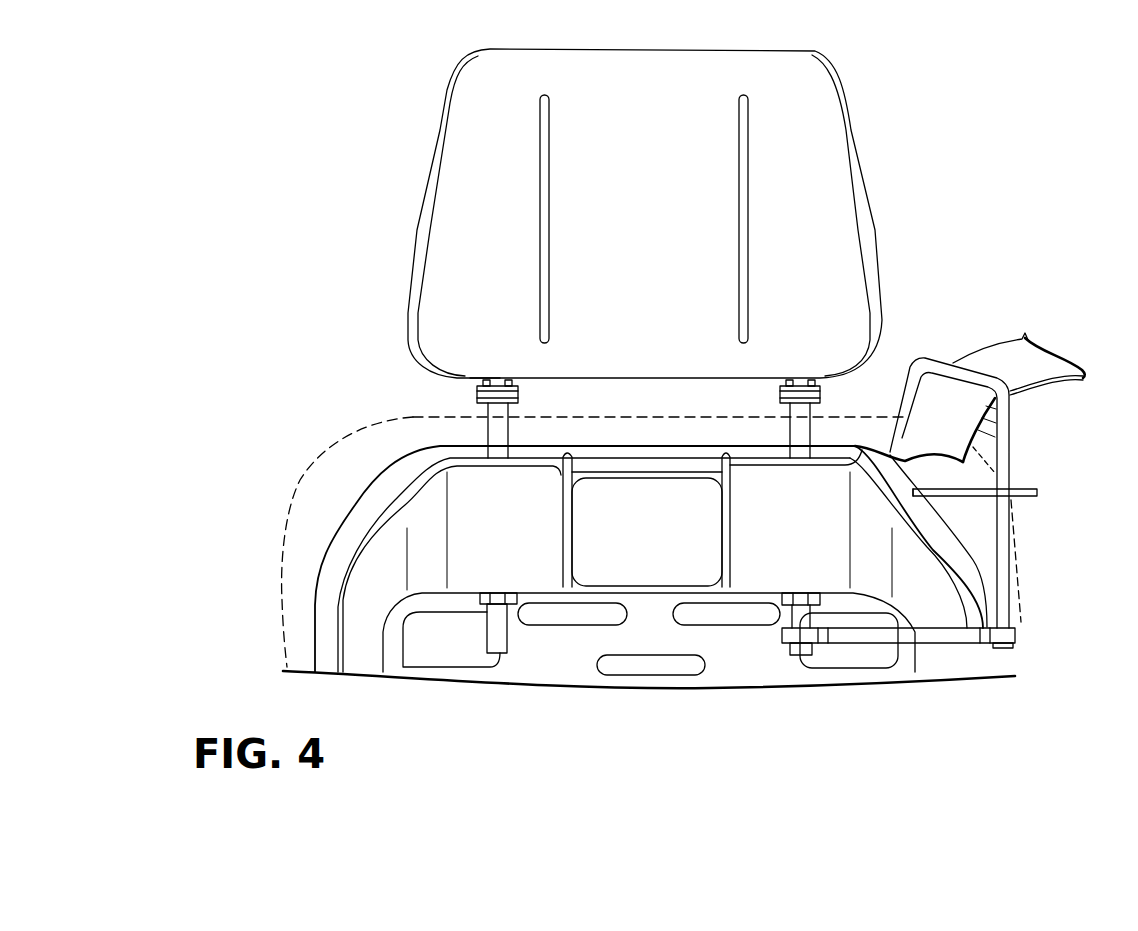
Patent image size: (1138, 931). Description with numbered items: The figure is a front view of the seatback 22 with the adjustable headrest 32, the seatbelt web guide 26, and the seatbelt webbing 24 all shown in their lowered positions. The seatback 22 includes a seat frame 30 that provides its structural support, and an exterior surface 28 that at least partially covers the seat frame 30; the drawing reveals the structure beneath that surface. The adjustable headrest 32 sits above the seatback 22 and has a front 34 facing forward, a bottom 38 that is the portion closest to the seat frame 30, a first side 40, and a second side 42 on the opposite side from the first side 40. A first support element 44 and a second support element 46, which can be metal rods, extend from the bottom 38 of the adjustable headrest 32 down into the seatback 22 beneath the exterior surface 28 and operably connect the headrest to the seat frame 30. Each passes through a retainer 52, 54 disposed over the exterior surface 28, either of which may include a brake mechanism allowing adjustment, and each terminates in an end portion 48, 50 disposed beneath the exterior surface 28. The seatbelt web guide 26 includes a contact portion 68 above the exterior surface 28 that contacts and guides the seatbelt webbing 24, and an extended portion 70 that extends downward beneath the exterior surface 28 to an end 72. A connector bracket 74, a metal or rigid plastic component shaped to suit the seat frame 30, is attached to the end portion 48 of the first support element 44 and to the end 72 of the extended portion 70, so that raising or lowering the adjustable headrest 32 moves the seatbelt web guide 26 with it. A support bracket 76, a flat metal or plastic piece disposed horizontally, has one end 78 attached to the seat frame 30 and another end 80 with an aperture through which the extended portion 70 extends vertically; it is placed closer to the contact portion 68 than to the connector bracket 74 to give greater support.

The seatback 22 is at (277, 563).
The seatbelt webbing 24 is at (1032, 357).
The seatbelt web guide 26 is at (937, 357).
The exterior surface 28 is at (350, 493).
The seat frame 30 is at (852, 453).
The adjustable headrest 32 is at (857, 128).
The front 34 is at (572, 130).
The bottom 38 is at (470, 383).
The first side 40 is at (860, 205).
The second side 42 is at (428, 198).
The first support element 44 is at (793, 434).
The second support element 46 is at (497, 432).
The end portion 48 is at (798, 617).
The end portion 50 is at (503, 638).
The retainer 52 is at (793, 396).
The retainer 54 is at (477, 395).
The contact portion 68 is at (987, 427).
The extended portion 70 is at (1003, 560).
The end 72 is at (1000, 623).
The connector bracket 74 is at (928, 635).
The support bracket 76 is at (977, 497).
The end 78 is at (917, 483).
The end 80 is at (1037, 495).